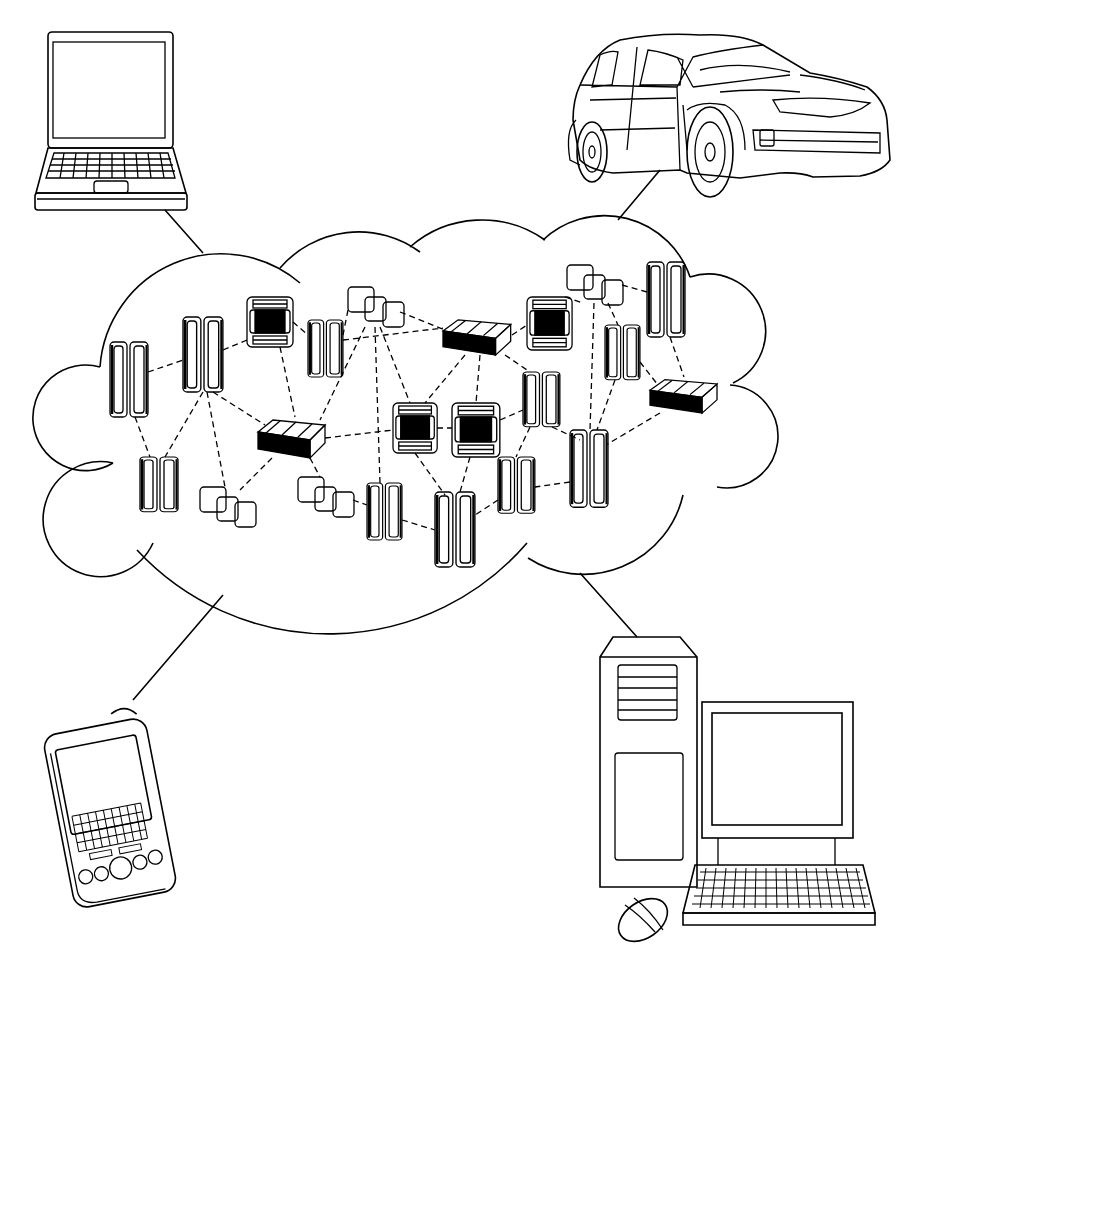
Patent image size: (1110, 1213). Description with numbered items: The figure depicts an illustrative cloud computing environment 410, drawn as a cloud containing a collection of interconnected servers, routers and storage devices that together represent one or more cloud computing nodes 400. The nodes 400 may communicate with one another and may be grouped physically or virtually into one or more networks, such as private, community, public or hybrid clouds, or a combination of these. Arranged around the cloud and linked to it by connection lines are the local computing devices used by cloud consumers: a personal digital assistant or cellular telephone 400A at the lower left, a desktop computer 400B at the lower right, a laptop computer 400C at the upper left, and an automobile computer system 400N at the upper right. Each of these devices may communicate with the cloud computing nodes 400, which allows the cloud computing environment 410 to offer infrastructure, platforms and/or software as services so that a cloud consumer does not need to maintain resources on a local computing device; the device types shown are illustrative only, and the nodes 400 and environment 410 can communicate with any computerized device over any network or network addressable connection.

The cloud computing nodes 400 is at (724, 425).
The cloud computing environment 410 is at (776, 392).
The personal digital assistant or cellular telephone 400A is at (165, 800).
The desktop computer 400B is at (772, 702).
The laptop computer 400C is at (175, 98).
The automobile computer system 400N is at (573, 117).